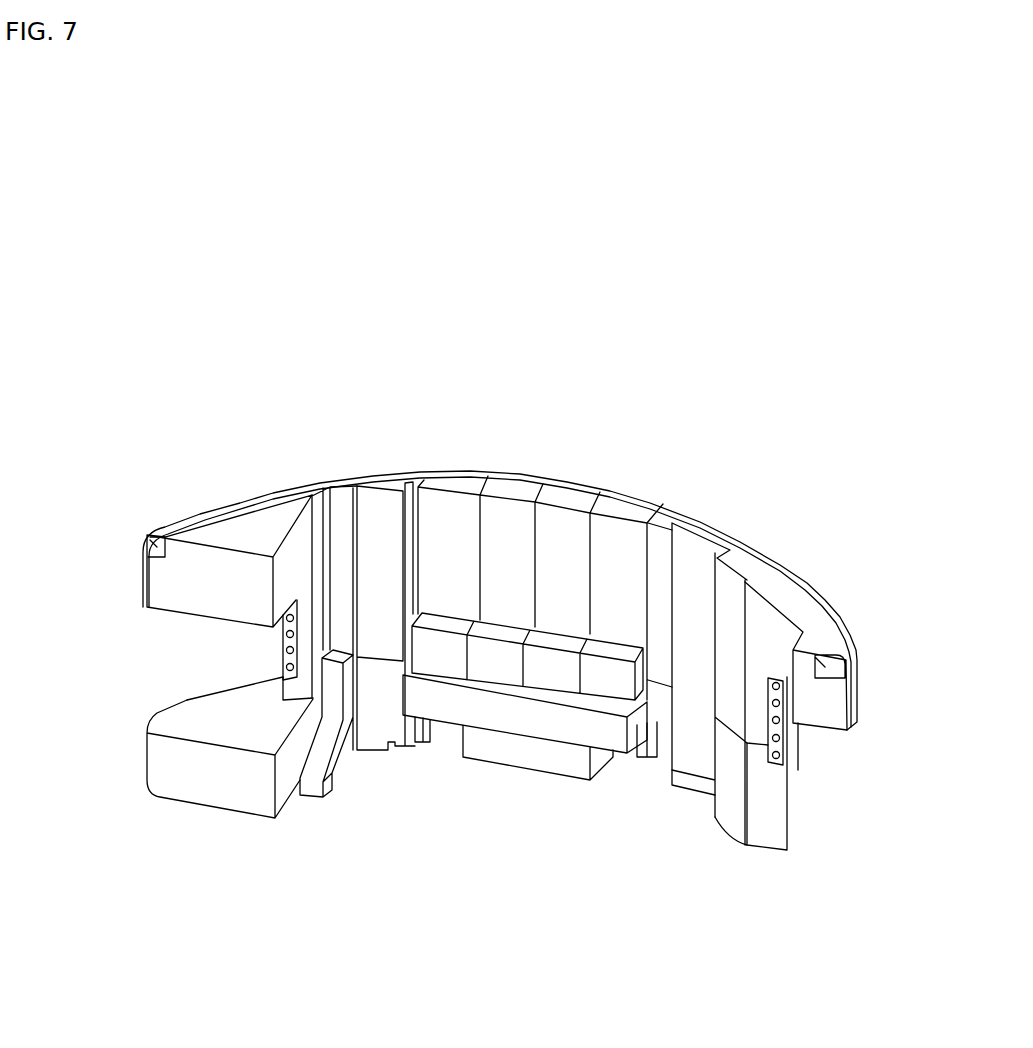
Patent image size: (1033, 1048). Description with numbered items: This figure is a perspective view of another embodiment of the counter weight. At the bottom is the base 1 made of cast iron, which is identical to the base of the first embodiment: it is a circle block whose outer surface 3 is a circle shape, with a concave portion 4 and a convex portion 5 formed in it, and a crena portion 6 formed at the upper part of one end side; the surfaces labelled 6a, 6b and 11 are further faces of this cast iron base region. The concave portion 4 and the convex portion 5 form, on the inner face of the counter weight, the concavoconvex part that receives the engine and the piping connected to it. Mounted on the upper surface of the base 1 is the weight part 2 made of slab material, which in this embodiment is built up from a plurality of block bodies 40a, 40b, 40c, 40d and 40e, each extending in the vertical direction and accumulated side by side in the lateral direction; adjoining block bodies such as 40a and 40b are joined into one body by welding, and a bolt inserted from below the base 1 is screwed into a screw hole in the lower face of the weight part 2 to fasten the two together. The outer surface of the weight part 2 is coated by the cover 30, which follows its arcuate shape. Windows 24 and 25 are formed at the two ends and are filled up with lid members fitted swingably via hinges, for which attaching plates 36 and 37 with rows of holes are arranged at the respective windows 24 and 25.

The base 1 is at (219, 834).
The weight part 2 is at (212, 488).
The outer surface 3 is at (800, 768).
The concave portion 4 is at (430, 727).
The convex portion 5 is at (333, 770).
The crena portion 6 is at (182, 713).
The upper surface of base block 6a is at (227, 698).
The projection of base block 6b is at (290, 688).
The side surface 11 is at (770, 797).
The window 24 is at (160, 645).
The window 25 is at (845, 786).
The cover 30 is at (587, 472).
The attaching plate 36 is at (283, 643).
The attaching plate 37 is at (780, 732).
The block body 40a is at (253, 517).
The block body 40b is at (378, 482).
The block body 40c is at (505, 485).
The block body 40d is at (742, 558).
The segment block 40e is at (808, 613).